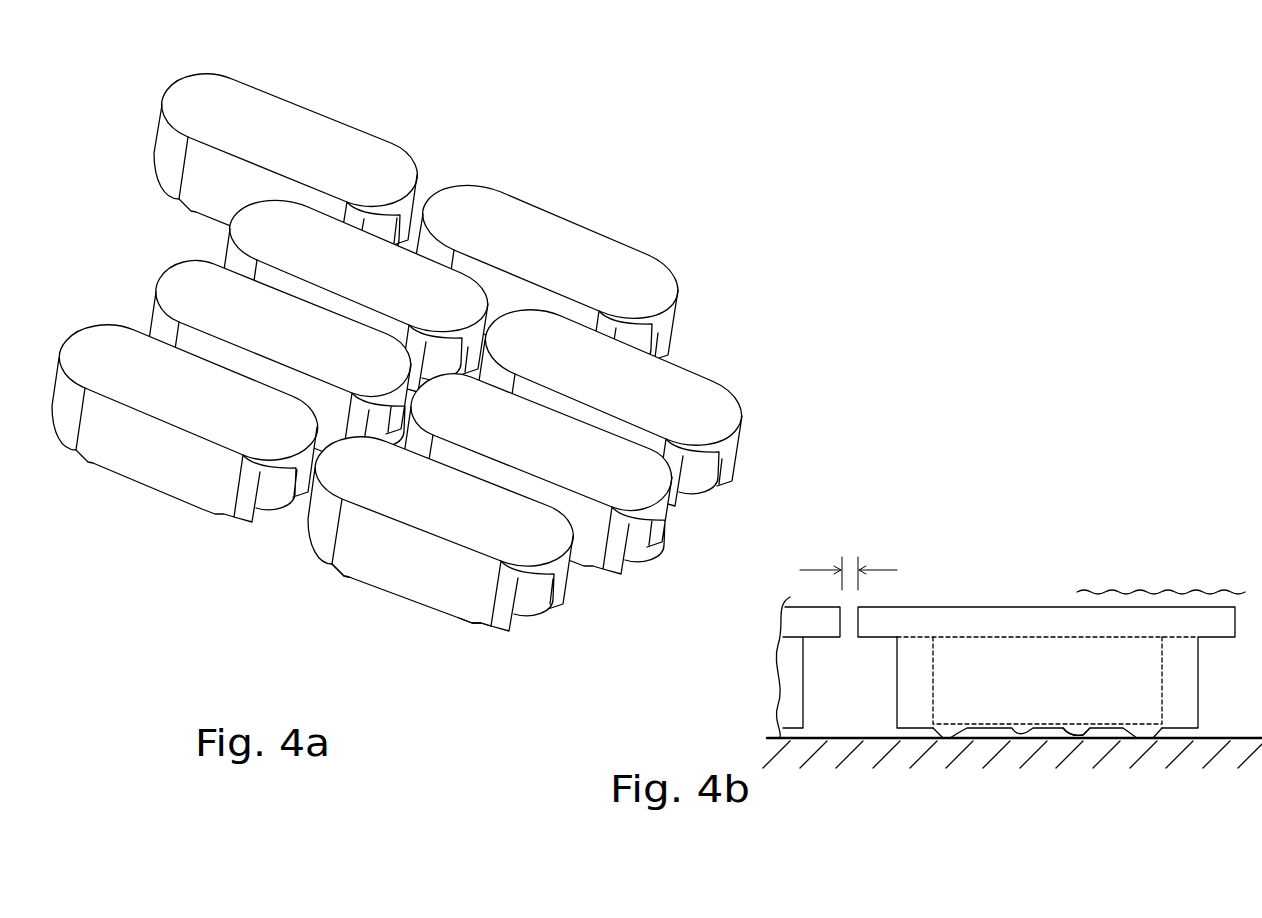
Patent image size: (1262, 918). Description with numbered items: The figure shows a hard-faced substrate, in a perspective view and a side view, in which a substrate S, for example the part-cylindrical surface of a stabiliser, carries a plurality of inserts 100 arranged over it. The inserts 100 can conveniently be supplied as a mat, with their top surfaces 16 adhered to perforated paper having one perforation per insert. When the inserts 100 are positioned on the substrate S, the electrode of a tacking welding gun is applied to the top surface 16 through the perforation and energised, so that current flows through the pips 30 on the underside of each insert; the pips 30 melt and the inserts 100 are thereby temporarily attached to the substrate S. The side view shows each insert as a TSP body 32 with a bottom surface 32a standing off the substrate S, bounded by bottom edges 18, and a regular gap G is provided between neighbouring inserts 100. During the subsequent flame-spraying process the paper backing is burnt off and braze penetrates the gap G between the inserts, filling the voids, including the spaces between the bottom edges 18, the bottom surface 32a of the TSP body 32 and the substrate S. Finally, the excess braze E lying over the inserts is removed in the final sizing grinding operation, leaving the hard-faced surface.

In FIG. 4A, the top surface 16 is at (222, 102).
In FIG. 4A, the inserts 100 is at (397, 350).
In FIG. 4A, the pips 30 is at (472, 625).
In FIG. 4B, the pips 30 is at (942, 742).
In FIG. 4A, the TSP body 32 is at (439, 559).
In FIG. 4B, the TSP body 32 is at (988, 657).
In FIG. 4B, the bottom surface 32a is at (1010, 735).
In FIG. 4B, the bottom edges 18 is at (1087, 725).
In FIG. 4A, the substrate S is at (779, 446).
In FIG. 4B, the substrate S is at (767, 736).
In FIG. 4B, the excess braze E is at (1117, 602).
In FIG. 4B, the gap G is at (848, 561).